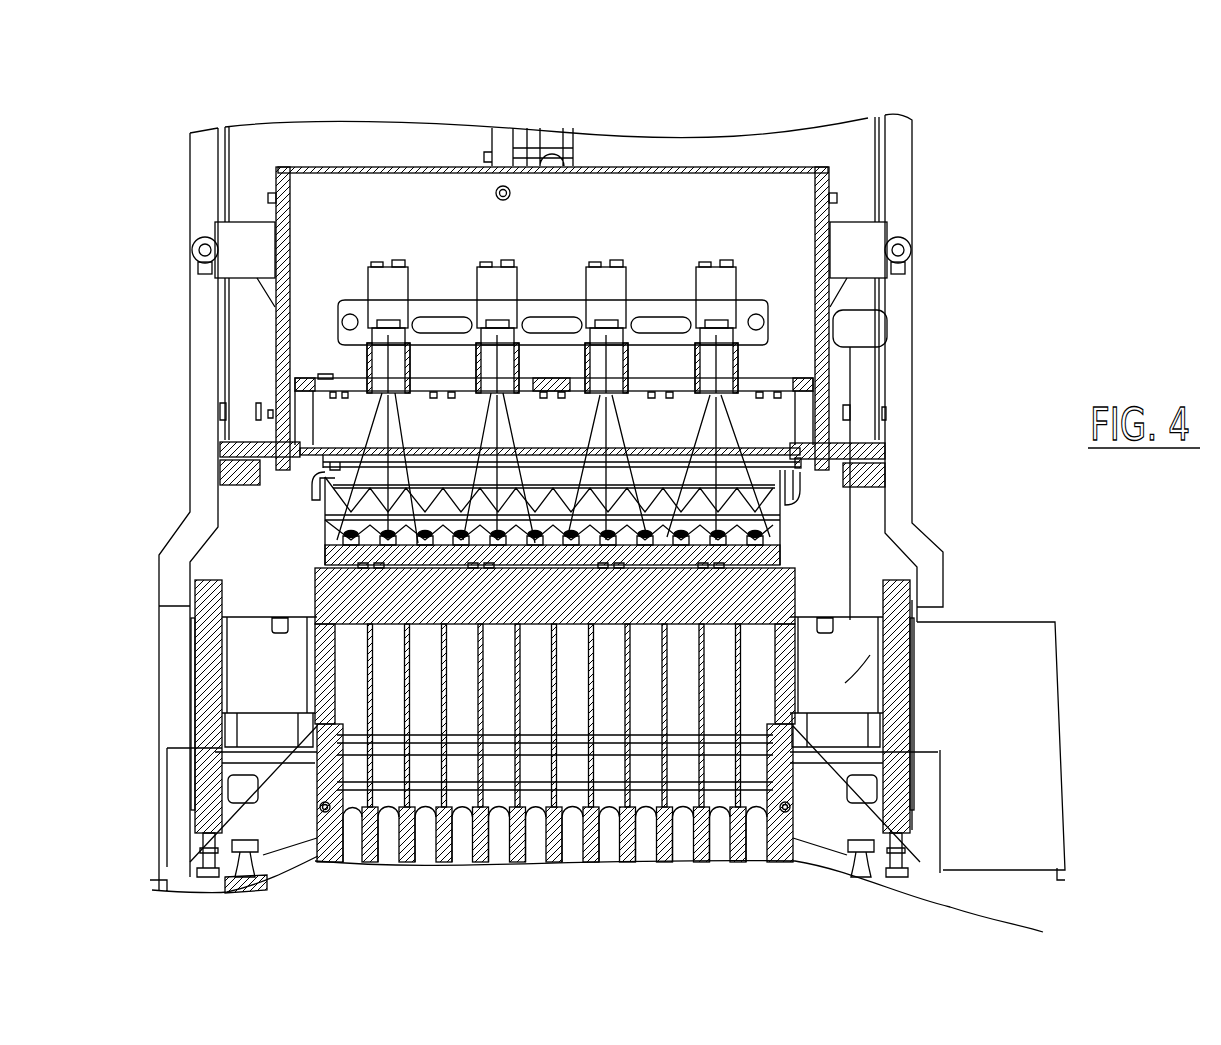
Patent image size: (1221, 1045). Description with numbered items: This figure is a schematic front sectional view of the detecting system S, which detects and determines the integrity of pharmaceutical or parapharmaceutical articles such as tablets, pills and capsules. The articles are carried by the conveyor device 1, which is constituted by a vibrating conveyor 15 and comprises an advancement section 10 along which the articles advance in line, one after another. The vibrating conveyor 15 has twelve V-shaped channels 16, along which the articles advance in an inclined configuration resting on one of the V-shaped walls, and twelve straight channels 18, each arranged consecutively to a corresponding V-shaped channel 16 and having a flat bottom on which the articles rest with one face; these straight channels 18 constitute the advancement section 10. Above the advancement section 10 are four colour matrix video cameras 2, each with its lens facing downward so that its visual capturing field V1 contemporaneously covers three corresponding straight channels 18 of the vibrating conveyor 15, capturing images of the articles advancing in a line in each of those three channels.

The conveyor device 1 is at (816, 523).
The colour matrix video camera 2 is at (367, 353).
The detecting system S is at (773, 402).
The V-shaped channel 16 is at (728, 545).
The visual capturing field V1 is at (695, 502).
The straight channel 18 is at (725, 545).
The vibrating conveyor 15 is at (790, 537).
The advancement section 10 is at (791, 555).